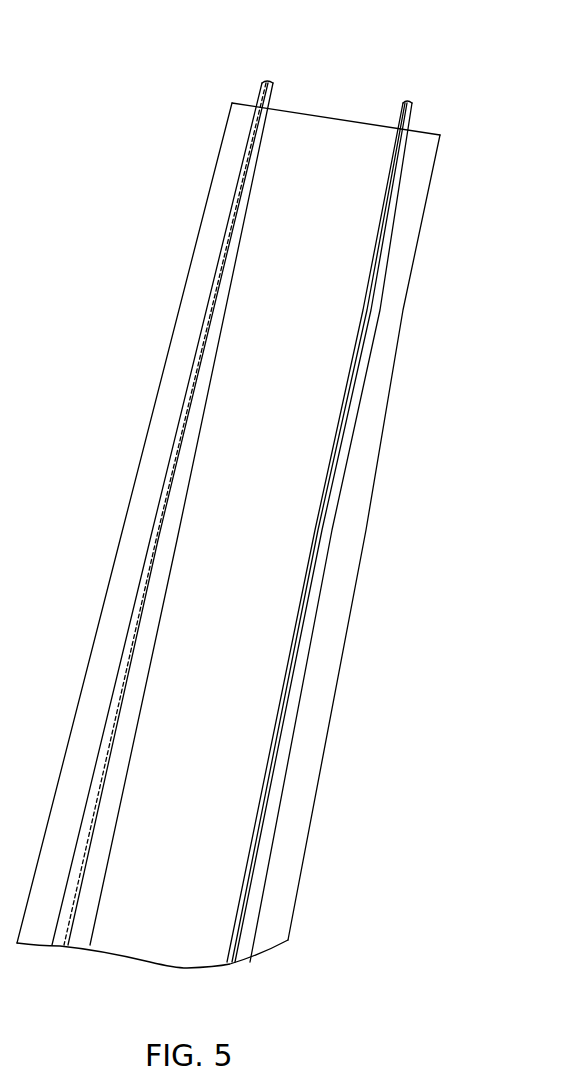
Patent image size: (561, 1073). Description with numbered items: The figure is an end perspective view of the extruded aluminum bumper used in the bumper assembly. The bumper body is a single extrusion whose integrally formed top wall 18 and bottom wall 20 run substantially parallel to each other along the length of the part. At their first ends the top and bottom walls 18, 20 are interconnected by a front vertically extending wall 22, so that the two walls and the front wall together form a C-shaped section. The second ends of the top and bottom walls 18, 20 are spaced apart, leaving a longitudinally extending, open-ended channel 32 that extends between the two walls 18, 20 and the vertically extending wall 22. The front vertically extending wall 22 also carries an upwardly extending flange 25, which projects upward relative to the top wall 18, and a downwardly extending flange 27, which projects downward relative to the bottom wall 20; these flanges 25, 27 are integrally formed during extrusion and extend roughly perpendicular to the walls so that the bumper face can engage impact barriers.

The top wall 18 is at (275, 85).
The bottom wall 20 is at (413, 106).
The channel 32 is at (277, 87).
The upwardly extending flange 25 is at (361, 520).
The downwardly extending flange 27 is at (138, 518).
The front vertically extending wall 22 is at (202, 948).